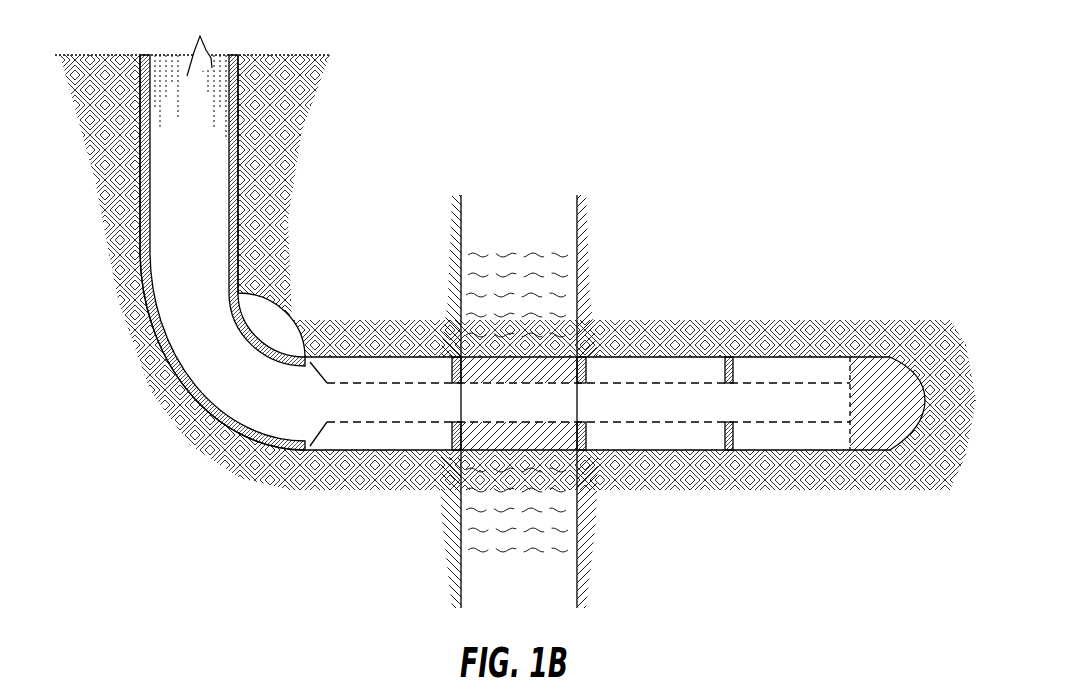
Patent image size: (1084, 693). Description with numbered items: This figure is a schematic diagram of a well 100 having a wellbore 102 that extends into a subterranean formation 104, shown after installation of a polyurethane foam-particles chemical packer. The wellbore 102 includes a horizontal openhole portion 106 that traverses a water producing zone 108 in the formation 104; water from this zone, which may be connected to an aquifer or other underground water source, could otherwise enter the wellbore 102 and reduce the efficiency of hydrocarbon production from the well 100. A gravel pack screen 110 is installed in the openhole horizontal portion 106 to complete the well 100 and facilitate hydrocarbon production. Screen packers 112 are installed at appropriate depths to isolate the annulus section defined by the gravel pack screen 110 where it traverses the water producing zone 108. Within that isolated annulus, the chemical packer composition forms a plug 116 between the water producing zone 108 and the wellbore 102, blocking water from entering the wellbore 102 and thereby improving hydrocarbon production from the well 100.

The well 100 is at (750, 50).
The wellbore 102 is at (183, 95).
The subterranean formation 104 is at (292, 129).
The horizontal openhole portion 106 is at (330, 357).
The water producing zone 108 is at (520, 214).
The gravel pack screen 110 is at (785, 383).
The screen packers 112 is at (452, 368).
The plug 116 is at (560, 362).